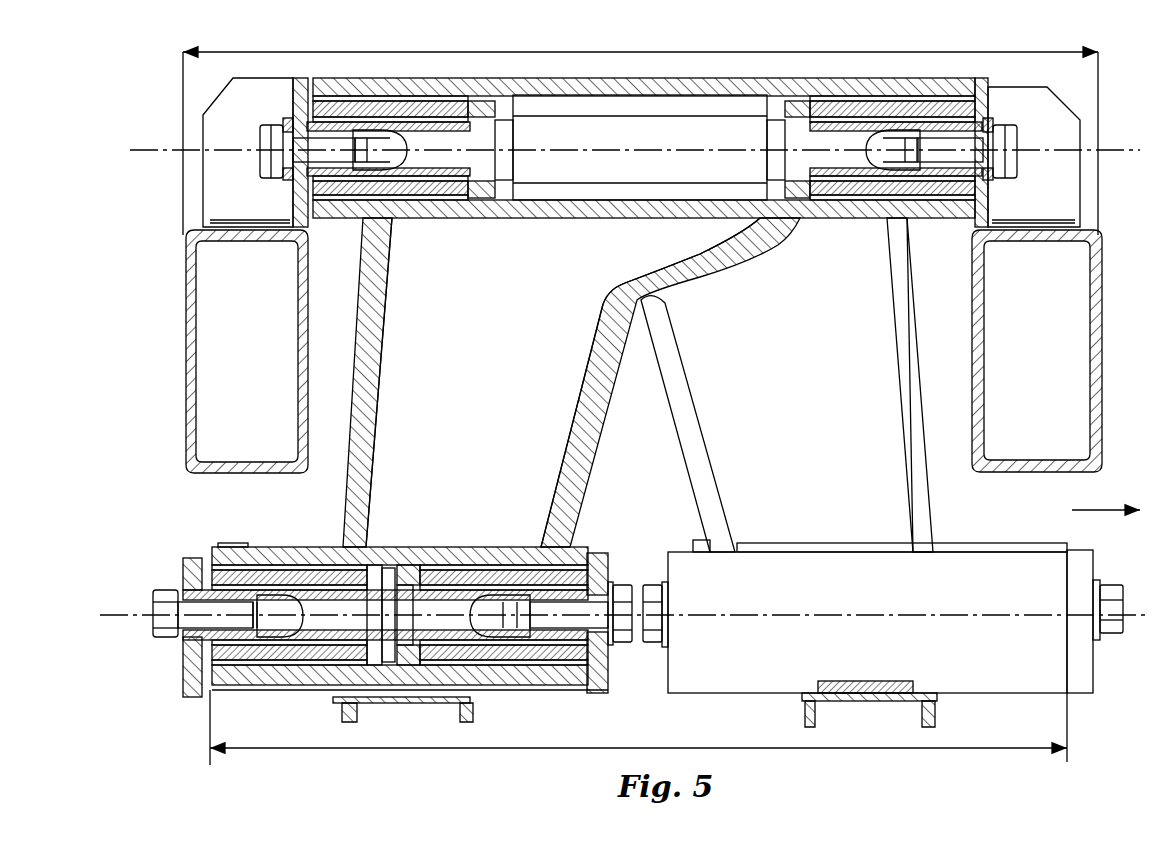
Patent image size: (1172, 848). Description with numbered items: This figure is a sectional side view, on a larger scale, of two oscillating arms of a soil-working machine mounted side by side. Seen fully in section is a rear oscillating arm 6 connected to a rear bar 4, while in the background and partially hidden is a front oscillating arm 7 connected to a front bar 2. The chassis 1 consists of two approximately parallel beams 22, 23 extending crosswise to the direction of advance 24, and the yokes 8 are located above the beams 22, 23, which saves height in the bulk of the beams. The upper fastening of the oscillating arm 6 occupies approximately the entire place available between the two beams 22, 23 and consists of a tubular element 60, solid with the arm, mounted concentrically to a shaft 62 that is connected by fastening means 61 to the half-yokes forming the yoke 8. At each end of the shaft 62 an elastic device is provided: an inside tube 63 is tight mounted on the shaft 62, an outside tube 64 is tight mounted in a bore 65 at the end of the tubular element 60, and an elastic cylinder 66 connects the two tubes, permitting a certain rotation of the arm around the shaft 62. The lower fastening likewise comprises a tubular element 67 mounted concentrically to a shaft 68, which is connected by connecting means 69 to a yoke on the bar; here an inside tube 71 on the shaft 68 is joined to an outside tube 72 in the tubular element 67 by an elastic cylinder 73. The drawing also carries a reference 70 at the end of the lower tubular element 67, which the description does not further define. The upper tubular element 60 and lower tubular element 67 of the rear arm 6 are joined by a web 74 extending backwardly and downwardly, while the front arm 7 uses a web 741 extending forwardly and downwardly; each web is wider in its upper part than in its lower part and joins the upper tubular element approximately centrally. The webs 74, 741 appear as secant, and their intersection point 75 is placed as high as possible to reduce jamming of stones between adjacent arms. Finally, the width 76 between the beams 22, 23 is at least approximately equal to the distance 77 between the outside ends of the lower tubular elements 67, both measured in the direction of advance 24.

The chassis 1 is at (1102, 236).
The front bar 2 is at (804, 714).
The rear bar 4 is at (350, 718).
The rear oscillating arm 6 is at (350, 478).
The front oscillating arm 7 is at (932, 480).
The yoke 8 is at (232, 123).
The beam 22 is at (1037, 351).
The beam 23 is at (247, 351).
The direction of advance 24 is at (1072, 510).
The tubular element 60 is at (579, 220).
The fastening means 61 is at (271, 170).
The shaft 62 is at (613, 165).
The inside tube 63 is at (425, 188).
The outside tube 64 is at (378, 196).
The bore 65 is at (491, 198).
The elastic cylinder 66 is at (367, 199).
The tubular element 67 is at (233, 555).
The shaft 68 is at (332, 548).
The connecting means 69 is at (160, 640).
The lower tube housing 70 is at (601, 690).
The inside tube 71 is at (497, 550).
The outside tube 72 is at (352, 612).
The elastic cylinder 73 is at (343, 662).
The web 74 is at (563, 382).
The web 741 is at (777, 385).
The intersection point 75 is at (641, 302).
The width 76 is at (1001, 54).
The distance 77 is at (925, 748).